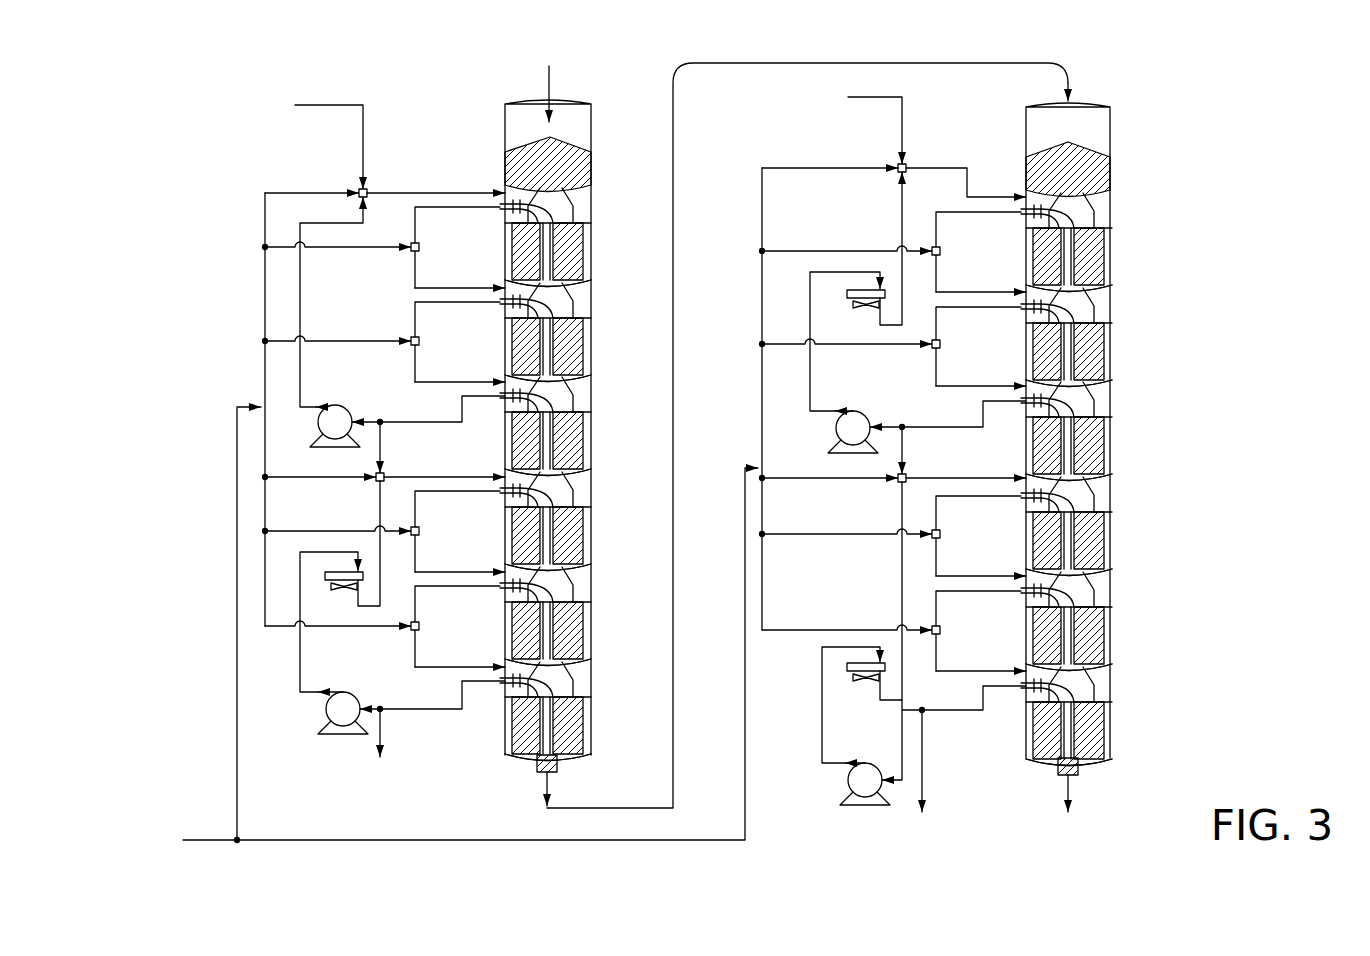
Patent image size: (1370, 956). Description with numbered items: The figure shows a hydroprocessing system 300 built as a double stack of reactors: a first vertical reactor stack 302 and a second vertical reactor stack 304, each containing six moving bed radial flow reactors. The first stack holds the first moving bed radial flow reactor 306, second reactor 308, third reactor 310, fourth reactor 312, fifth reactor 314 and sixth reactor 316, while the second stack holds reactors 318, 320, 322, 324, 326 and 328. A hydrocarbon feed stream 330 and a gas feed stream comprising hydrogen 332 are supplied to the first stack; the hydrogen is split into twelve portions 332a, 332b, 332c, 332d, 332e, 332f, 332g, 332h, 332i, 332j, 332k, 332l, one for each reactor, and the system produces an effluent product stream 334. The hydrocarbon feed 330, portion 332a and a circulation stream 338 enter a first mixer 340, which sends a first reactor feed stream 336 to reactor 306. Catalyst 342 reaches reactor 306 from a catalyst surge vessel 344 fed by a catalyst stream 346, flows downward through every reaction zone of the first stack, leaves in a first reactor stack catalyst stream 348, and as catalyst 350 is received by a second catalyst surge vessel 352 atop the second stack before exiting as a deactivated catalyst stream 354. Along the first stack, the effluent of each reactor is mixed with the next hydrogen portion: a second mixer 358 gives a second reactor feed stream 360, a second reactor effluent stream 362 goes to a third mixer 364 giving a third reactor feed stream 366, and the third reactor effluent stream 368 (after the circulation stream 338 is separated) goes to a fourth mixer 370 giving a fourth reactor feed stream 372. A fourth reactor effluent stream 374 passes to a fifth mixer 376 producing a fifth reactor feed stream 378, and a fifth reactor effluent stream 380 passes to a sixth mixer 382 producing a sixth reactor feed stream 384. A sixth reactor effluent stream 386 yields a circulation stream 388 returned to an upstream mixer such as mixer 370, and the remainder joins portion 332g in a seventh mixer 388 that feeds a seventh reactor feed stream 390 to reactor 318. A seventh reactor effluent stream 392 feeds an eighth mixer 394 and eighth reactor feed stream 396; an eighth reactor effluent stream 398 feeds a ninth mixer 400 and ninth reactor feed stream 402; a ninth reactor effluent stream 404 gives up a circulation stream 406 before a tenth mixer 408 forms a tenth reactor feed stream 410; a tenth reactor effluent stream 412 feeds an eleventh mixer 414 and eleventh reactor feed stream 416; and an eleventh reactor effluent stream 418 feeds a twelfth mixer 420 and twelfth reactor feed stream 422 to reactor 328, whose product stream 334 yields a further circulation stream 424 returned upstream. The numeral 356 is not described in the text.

The hydroprocessing system 300 is at (882, 47).
The first vertical reactor stack 302 is at (598, 130).
The second vertical reactor stack 304 is at (1120, 152).
The first moving bed radial flow reactor 306 is at (586, 249).
The second moving bed radial flow reactor 308 is at (586, 344).
The third moving bed radial flow reactor 310 is at (586, 438).
The fourth moving bed radial flow reactor 312 is at (586, 533).
The fifth moving bed radial flow reactor 314 is at (586, 628).
The sixth moving bed radial flow reactor 316 is at (586, 723).
The first moving bed radial flow reactor of the second stack 318 is at (1106, 254).
The second moving bed radial flow reactor of the second stack 320 is at (1106, 349).
The third moving bed radial flow reactor of the second stack 322 is at (1106, 443).
The fourth moving bed radial flow reactor of the second stack 324 is at (1106, 538).
The fifth moving bed radial flow reactor of the second stack 326 is at (1106, 633).
The sixth moving bed radial flow reactor of the second stack 328 is at (1106, 728).
The hydrocarbon feed stream 330 is at (300, 106).
The gas feed stream comprising hydrogen 332 is at (202, 840).
The first gas feed stream portion 332a is at (275, 193).
The second gas feed stream portion 332b is at (268, 248).
The third gas feed stream portion 332c is at (268, 342).
The fourth gas feed stream portion 332d is at (263, 482).
The fifth gas feed stream portion 332e is at (263, 537).
The sixth gas feed stream portion 332f is at (270, 630).
The seventh gas feed stream portion 332g is at (764, 168).
The eighth gas feed stream portion 332h is at (764, 252).
The ninth gas feed stream portion 332i is at (764, 345).
The tenth gas feed stream portion 332j is at (808, 481).
The eleventh gas feed stream portion 332k is at (806, 537).
The twelfth gas feed stream portion 332l is at (788, 632).
The effluent product stream 334 is at (924, 764).
The first reactor feed stream 336 is at (424, 193).
The circulation stream 338 is at (302, 290).
The first mixer 340 is at (360, 190).
The catalyst 342 is at (586, 186).
The catalyst surge vessel 344 is at (586, 152).
The catalyst stream 346 is at (556, 80).
The first reactor stack catalyst stream 348 is at (616, 810).
The catalyst 350 is at (1106, 178).
The second catalyst surge vessel 352 is at (1110, 118).
The deactivated catalyst stream 354 is at (1076, 798).
The stage withdrawal line 356 is at (432, 208).
The second mixer 358 is at (412, 246).
The second reactor feed stream 360 is at (468, 288).
The second reactor effluent stream 362 is at (432, 303).
The third mixer 364 is at (412, 340).
The third reactor feed stream 366 is at (468, 382).
The third reactor effluent stream 368 is at (396, 424).
The fourth mixer 370 is at (376, 474).
The fourth reactor feed stream 372 is at (452, 477).
The fourth reactor effluent stream 374 is at (432, 494).
The fifth mixer 376 is at (412, 528).
The fifth reactor feed stream 378 is at (468, 572).
The fifth reactor effluent stream 380 is at (432, 589).
The sixth mixer 382 is at (412, 632).
The sixth reactor feed stream 384 is at (468, 667).
The sixth reactor effluent stream 386 is at (384, 736).
The circulation stream 388 is at (302, 668).
The seventh reactor feed stream 390 is at (938, 168).
The seventh reactor effluent stream 392 is at (954, 213).
The eighth mixer 394 is at (934, 248).
The eighth reactor feed stream 396 is at (996, 292).
The eighth reactor effluent stream 398 is at (954, 308).
The ninth mixer 400 is at (934, 348).
The ninth reactor feed stream 402 is at (996, 386).
The ninth reactor effluent stream 404 is at (921, 429).
The circulation stream 406 is at (812, 378).
The tenth mixer 408 is at (900, 476).
The tenth reactor feed stream 410 is at (972, 481).
The tenth reactor effluent stream 412 is at (954, 498).
The eleventh mixer 414 is at (934, 531).
The eleventh reactor feed stream 416 is at (996, 576).
The eleventh reactor effluent stream 418 is at (954, 593).
The twelfth mixer 420 is at (934, 627).
The twelfth reactor feed stream 422 is at (996, 671).
The circulation stream 424 is at (824, 712).